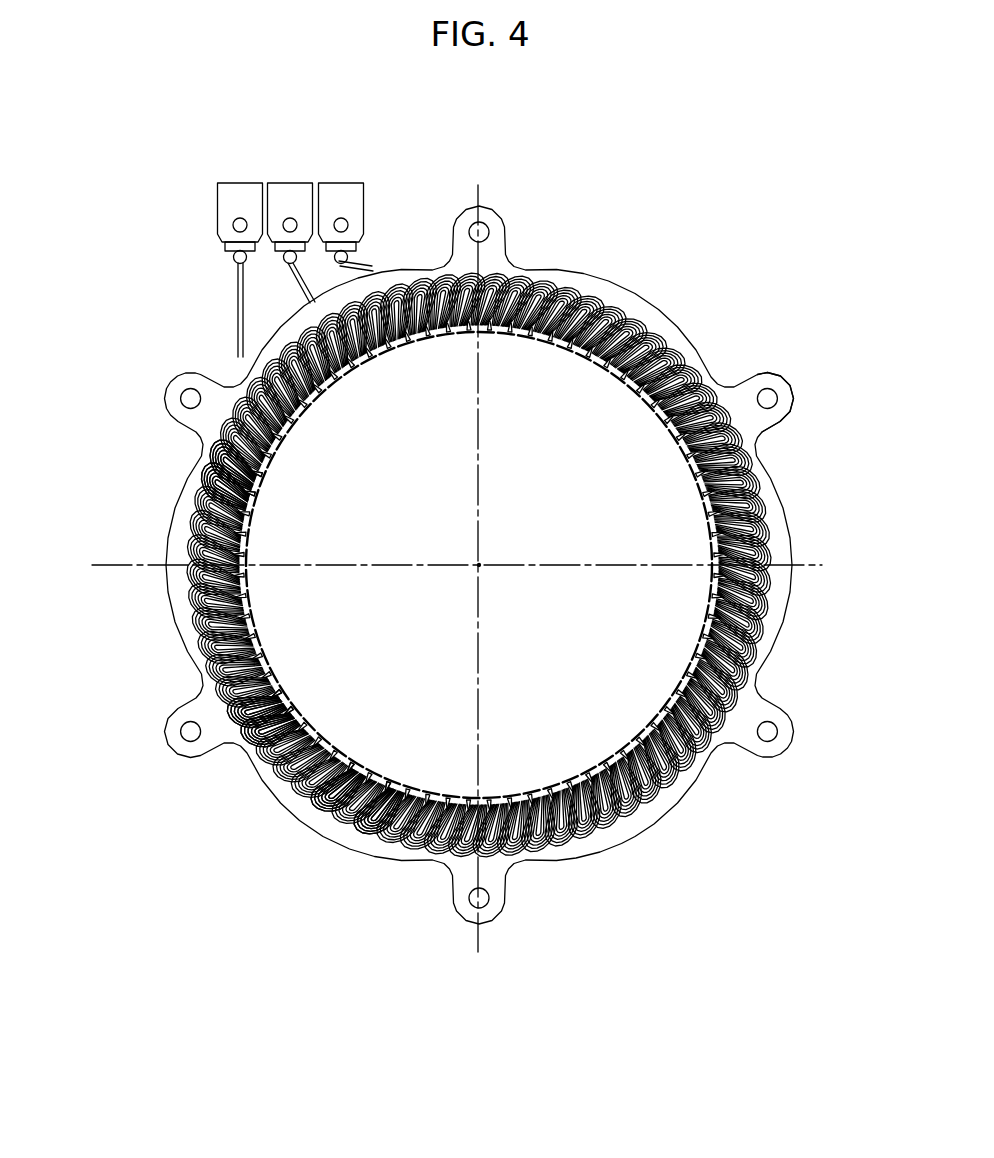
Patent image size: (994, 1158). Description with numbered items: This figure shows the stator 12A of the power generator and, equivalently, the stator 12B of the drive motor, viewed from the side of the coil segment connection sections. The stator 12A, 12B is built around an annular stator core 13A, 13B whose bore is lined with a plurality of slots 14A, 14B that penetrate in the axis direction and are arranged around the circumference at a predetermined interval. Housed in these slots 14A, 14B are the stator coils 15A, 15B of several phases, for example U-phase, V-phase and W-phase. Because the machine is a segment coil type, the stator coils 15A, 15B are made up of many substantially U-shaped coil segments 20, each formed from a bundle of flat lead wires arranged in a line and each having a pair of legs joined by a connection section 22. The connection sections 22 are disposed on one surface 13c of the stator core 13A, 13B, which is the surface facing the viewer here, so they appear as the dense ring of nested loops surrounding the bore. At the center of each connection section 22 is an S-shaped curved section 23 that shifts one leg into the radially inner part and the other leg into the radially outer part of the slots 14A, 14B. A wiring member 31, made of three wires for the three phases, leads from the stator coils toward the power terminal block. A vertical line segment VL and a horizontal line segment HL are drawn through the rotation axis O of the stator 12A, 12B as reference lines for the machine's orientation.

The stator 12A is at (686, 176).
The stator 12B is at (469, 548).
The stator core 13A is at (716, 358).
The stator core 13B is at (516, 565).
The one surface of the stator core 13c is at (764, 433).
The slots 14A is at (342, 377).
The slots 14B is at (479, 565).
The stator coils 15A is at (192, 478).
The stator coils 15B is at (231, 474).
The coil segments 20 is at (203, 687).
The connection section 22 is at (330, 750).
The S-shaped curved section 23 is at (318, 817).
The wiring member 31 is at (376, 210).
The rotation axis O is at (480, 564).
The line segment HL is at (843, 568).
The line segment VL is at (480, 937).